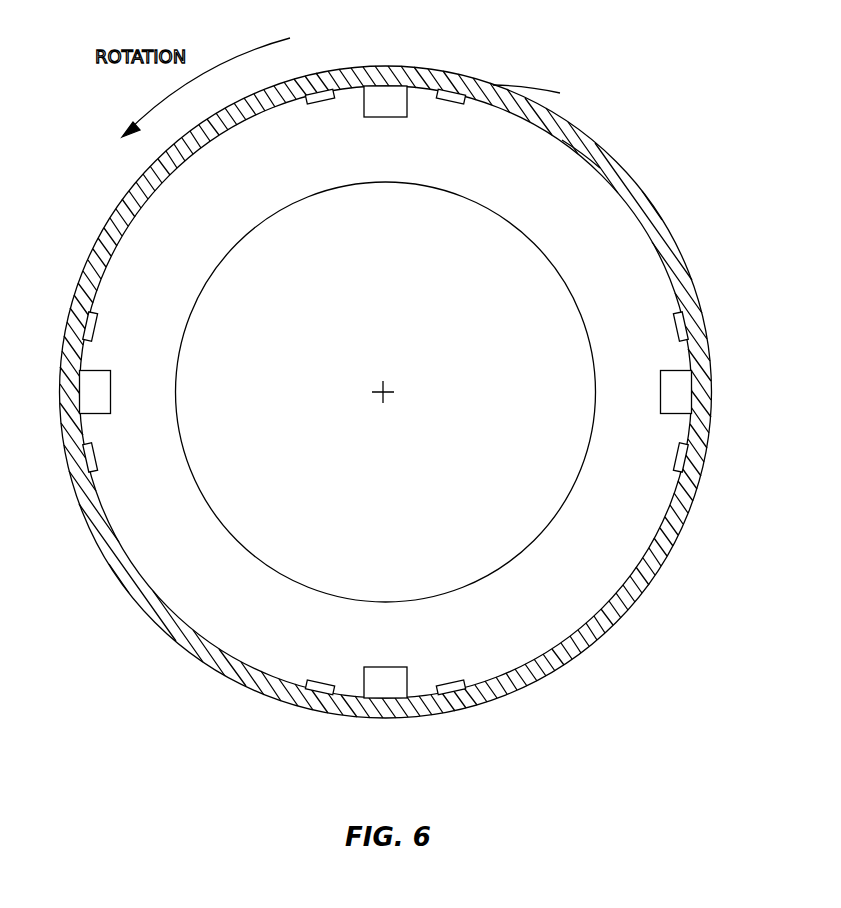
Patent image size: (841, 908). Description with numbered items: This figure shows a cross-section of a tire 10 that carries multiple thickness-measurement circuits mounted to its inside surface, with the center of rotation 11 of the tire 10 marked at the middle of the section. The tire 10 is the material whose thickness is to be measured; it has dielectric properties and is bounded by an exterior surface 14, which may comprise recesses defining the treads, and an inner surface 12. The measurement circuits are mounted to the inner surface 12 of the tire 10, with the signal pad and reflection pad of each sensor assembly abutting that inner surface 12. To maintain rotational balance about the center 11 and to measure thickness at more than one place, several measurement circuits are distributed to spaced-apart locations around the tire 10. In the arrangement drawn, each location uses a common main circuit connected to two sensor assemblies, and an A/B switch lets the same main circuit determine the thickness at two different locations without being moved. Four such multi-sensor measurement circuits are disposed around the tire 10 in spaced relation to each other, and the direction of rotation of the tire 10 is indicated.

The tire 10 is at (582, 147).
The axis of rotation 11 is at (388, 385).
The inner surface 12 is at (562, 140).
The exterior surface 14 is at (493, 85).